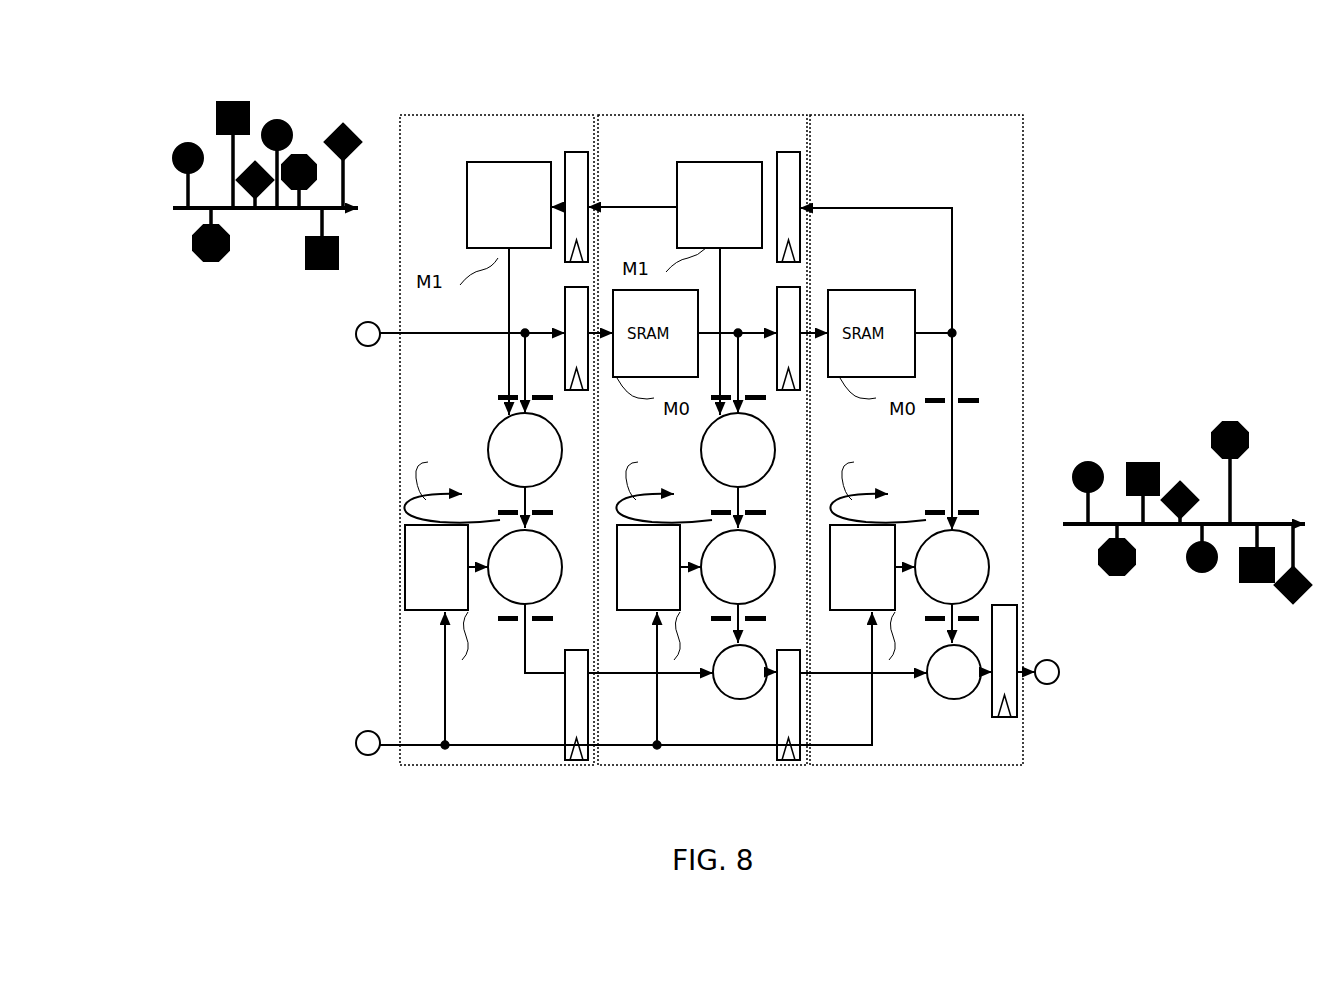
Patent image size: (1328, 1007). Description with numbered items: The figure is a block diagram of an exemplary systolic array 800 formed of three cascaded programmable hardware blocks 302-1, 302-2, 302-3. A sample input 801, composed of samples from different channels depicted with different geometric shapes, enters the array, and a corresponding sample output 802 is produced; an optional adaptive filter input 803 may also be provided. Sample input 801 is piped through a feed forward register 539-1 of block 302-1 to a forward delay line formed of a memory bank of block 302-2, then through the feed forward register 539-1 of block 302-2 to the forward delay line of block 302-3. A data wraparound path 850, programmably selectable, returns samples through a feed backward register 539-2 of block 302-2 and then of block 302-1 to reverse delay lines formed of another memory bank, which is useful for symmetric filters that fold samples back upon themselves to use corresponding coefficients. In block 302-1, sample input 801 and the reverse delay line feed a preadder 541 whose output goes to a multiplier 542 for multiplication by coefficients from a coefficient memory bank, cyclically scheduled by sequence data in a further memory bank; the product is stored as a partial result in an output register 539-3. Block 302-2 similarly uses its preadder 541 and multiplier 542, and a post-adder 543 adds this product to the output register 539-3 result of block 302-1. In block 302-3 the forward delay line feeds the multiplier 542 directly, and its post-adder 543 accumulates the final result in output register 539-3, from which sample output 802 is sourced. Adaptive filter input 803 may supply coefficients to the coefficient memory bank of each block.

The systolic array 800 is at (1178, 41).
The sample input 801 is at (373, 87).
The sample output 802 is at (1310, 417).
The adaptive filter input 803 is at (354, 718).
The programmable hardware block 302-1 is at (483, 115).
The programmable hardware block 302-2 is at (692, 115).
The programmable hardware block 302-3 is at (897, 115).
The feed forward register 539-1 is at (565, 312).
The feed backward register 539-2 is at (565, 158).
The output register 539-3 is at (565, 718).
The preadder 541 is at (488, 458).
The multiplier 542 is at (696, 564).
The post-adder 543 is at (722, 692).
The data wraparound path 850 is at (880, 208).